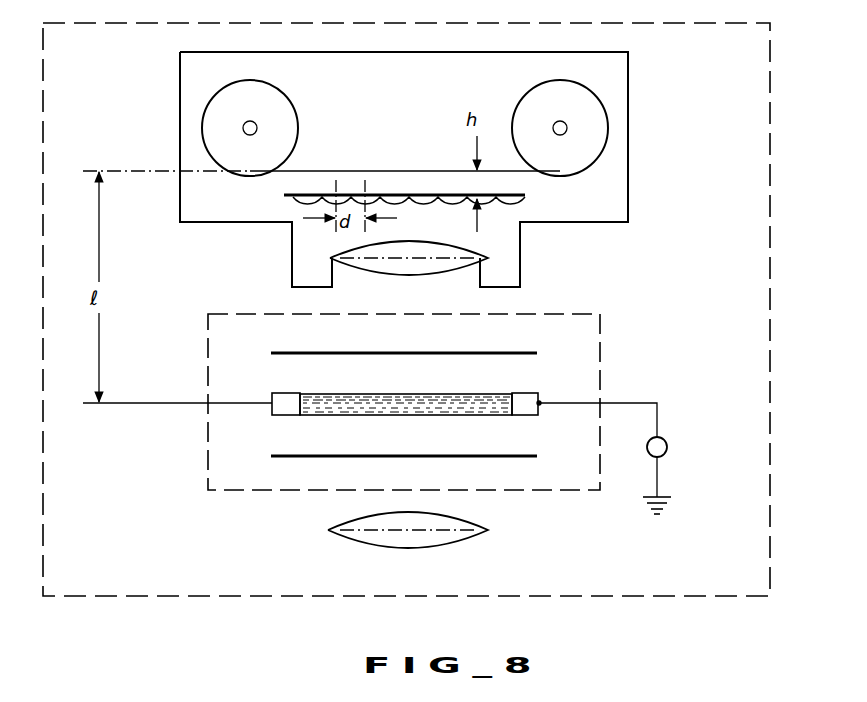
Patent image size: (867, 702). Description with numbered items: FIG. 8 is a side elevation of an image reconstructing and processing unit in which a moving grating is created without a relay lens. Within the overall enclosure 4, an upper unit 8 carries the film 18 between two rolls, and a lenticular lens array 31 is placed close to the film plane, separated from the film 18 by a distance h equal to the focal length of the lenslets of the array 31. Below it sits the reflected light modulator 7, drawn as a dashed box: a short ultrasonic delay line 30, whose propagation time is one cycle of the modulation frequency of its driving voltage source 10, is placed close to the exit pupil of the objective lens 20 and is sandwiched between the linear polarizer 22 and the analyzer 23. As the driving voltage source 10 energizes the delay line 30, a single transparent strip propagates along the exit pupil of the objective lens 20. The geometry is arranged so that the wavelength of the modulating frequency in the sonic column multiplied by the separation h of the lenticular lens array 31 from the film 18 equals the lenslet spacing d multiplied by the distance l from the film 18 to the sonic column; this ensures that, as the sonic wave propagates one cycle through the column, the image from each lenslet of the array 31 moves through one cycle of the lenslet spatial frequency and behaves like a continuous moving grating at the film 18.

The housing enclosure 4 is at (165, 600).
The reflected light modulator 7 is at (606, 362).
The film transport 8 is at (178, 117).
The driving voltage source 10 is at (664, 439).
The film 18 is at (388, 170).
The objective lens 20 is at (491, 532).
The linear polarizer 22 is at (522, 455).
The analyzer 23 is at (522, 352).
The ultrasonic delay line 30 is at (294, 390).
The lenticular lens array 31 is at (527, 200).